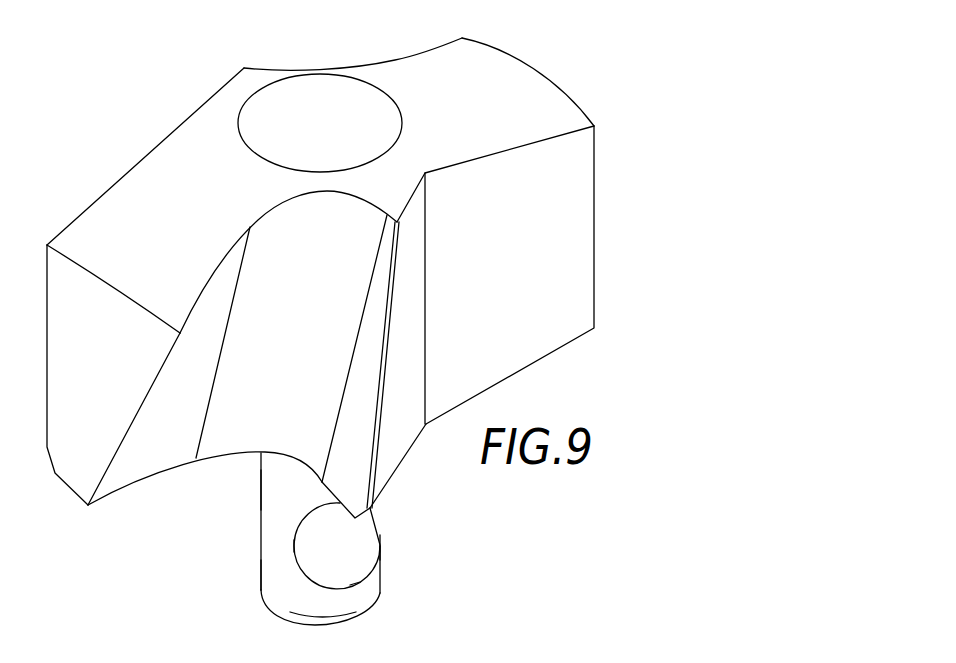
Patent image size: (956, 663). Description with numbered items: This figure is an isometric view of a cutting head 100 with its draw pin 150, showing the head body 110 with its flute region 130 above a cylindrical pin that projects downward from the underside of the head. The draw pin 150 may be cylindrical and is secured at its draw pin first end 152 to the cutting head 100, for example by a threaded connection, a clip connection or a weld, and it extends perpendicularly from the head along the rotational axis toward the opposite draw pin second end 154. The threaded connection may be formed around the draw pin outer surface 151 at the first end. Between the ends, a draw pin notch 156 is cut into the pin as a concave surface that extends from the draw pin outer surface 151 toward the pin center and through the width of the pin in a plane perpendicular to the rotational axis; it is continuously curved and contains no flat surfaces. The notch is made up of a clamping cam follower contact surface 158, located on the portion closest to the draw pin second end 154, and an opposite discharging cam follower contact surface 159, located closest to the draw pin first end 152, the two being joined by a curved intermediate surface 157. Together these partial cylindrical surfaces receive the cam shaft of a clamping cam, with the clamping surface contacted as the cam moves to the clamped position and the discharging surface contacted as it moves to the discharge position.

The cutting head 100 is at (86, 133).
The insert body top face 110 is at (512, 93).
The chip flute 130 is at (190, 308).
The draw pin 150 is at (224, 547).
The draw pin outer surface 151 is at (272, 583).
The draw pin first end 152 is at (243, 486).
The draw pin second end 154 is at (386, 621).
The draw pin notch 156 is at (384, 535).
The intermediate surface 157 is at (303, 557).
The clamping cam follower contact surface 158 is at (352, 577).
The discharging cam follower contact surface 159 is at (307, 528).